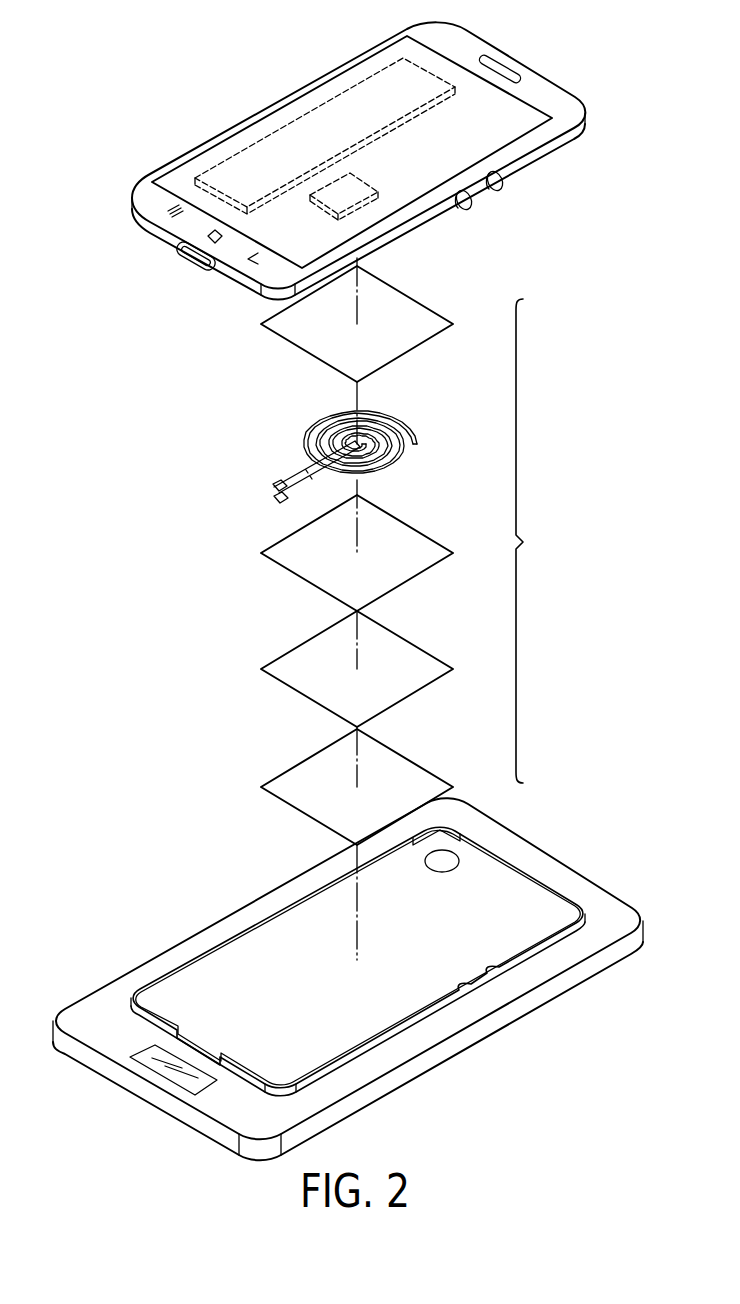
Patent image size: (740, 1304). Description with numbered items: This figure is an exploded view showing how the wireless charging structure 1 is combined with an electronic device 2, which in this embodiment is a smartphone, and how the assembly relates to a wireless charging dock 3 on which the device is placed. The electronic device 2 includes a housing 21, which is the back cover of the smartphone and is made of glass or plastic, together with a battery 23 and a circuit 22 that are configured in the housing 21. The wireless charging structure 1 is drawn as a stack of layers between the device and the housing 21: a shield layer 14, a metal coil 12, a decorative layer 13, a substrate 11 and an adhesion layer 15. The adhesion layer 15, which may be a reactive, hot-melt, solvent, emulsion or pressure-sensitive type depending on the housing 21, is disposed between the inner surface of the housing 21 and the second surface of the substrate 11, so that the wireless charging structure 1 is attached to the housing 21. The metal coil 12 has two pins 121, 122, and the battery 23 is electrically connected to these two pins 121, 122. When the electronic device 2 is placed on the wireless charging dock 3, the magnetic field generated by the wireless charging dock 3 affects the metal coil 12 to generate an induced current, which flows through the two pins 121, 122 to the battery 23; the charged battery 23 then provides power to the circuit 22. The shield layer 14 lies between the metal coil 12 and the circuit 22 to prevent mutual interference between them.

The wireless charging structure 1 is at (526, 541).
The electronic device 2 is at (383, 160).
The wireless charging dock 3 is at (348, 979).
The substrate 11 is at (430, 663).
The metal coil 12 is at (353, 468).
The decorative layer 13 is at (430, 546).
The shield layer 14 is at (430, 320).
The adhesion layer 15 is at (430, 782).
The housing 21 is at (210, 945).
The circuit 22 is at (323, 190).
The battery 23 is at (227, 160).
The pin 121 is at (273, 488).
The pin 122 is at (275, 500).